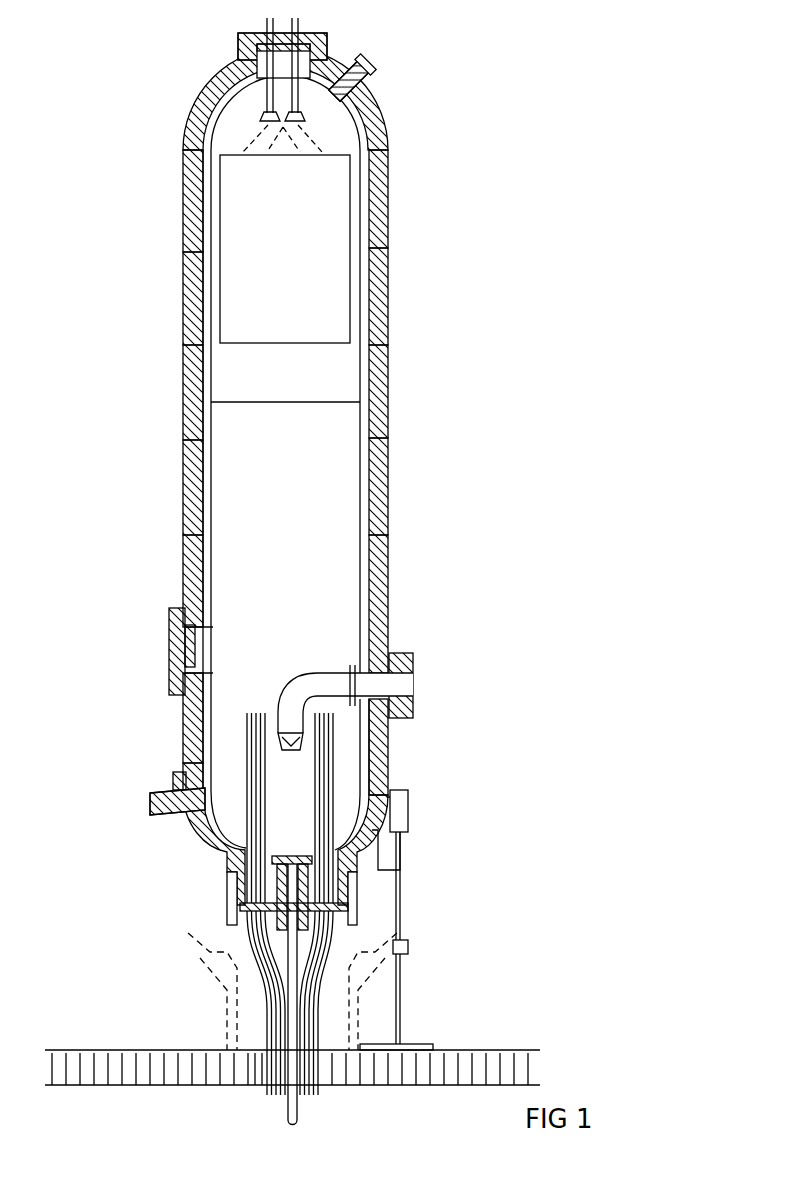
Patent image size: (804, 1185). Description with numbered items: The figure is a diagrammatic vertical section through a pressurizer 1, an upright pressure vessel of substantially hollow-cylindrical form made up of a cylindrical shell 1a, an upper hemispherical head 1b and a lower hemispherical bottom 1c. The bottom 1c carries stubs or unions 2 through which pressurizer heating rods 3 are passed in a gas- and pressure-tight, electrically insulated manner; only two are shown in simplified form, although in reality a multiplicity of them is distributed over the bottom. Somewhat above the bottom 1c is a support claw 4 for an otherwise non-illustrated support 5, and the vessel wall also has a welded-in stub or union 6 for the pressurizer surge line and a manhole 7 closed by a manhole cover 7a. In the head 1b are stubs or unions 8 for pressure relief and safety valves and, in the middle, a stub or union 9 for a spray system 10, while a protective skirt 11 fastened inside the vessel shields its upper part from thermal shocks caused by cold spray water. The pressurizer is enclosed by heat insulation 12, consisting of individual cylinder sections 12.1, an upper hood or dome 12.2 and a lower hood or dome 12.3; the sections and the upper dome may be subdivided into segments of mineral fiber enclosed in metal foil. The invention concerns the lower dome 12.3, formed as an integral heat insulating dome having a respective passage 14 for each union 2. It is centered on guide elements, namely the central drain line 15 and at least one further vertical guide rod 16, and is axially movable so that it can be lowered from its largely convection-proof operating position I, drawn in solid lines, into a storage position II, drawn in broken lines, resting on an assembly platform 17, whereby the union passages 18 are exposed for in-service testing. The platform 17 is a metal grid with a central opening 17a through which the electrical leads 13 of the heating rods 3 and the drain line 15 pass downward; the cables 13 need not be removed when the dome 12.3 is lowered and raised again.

The pressurizer 1 is at (278, 477).
The cylindrical shell 1a is at (210, 287).
The upper hemispherical head 1b is at (222, 100).
The lower hemispherical bottom 1c is at (215, 830).
The stubs or unions 2 is at (237, 893).
The pressurizer heating rods 3 is at (333, 925).
The support claw 4 is at (185, 778).
The support 5 is at (153, 805).
The stub or union for pressurizer surge line 6 is at (400, 685).
The manhole 7 is at (205, 645).
The manhole cover 7a is at (180, 652).
The stubs or unions for pressure relief valves and safety valves 8 is at (337, 78).
The stub or union for spray system 9 is at (258, 68).
The spray system 10 is at (266, 107).
The protective skirt 11 is at (333, 213).
The heat insulation 12 is at (328, 472).
The cylinder sections 12.1 is at (385, 470).
The upper hood or dome 12.2 is at (378, 115).
The lower hood or dome 12.3 is at (370, 840).
The electrical leads 13 is at (237, 961).
The tube sheet 14 is at (345, 887).
The central drain line 15 is at (288, 1115).
The vertical guide rod 16 is at (400, 900).
The assembly platform 17 is at (490, 1055).
The central opening 17a is at (260, 1082).
The union passages 18 is at (295, 856).
The operating position I is at (408, 826).
The storage position II is at (410, 950).